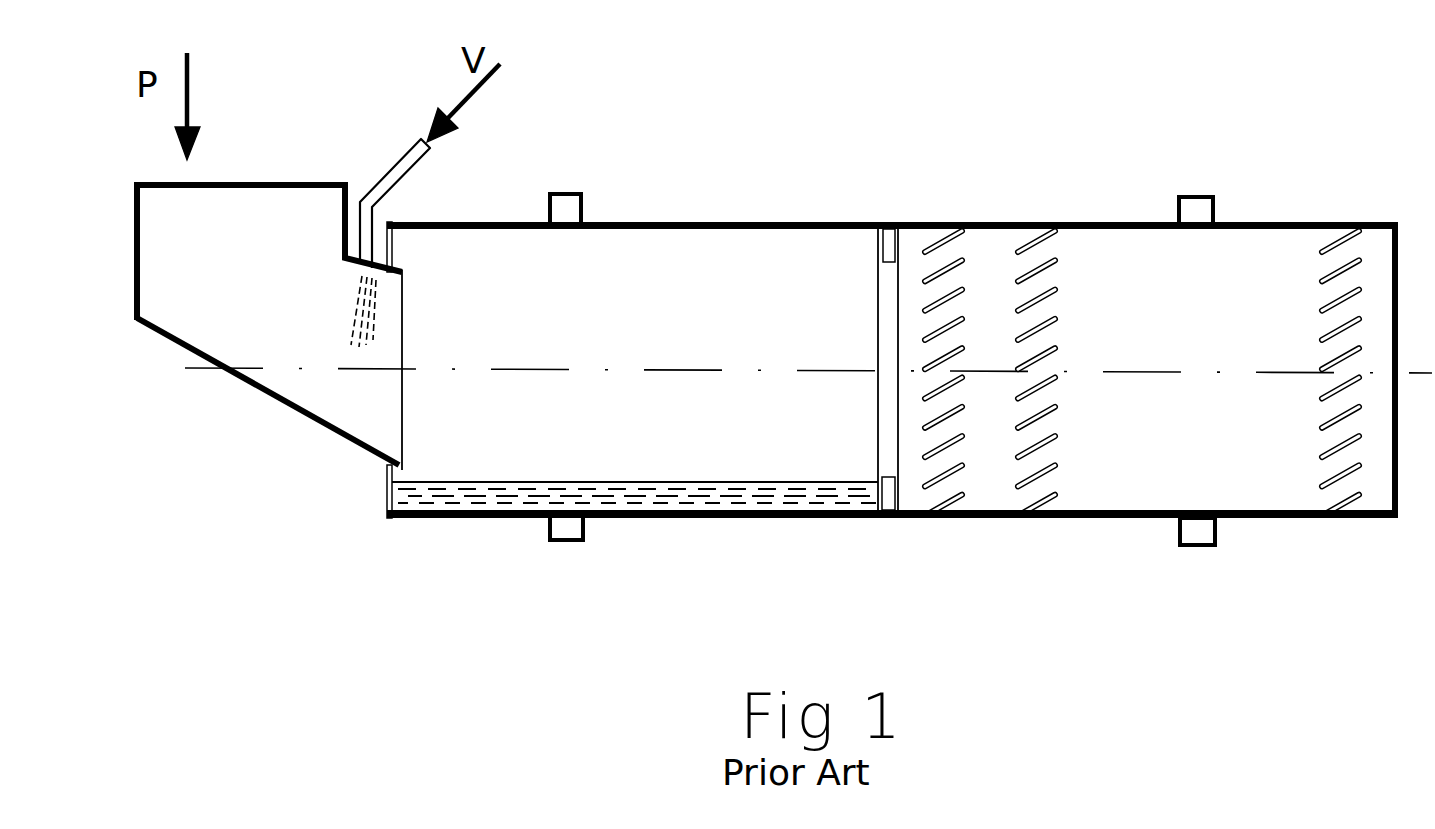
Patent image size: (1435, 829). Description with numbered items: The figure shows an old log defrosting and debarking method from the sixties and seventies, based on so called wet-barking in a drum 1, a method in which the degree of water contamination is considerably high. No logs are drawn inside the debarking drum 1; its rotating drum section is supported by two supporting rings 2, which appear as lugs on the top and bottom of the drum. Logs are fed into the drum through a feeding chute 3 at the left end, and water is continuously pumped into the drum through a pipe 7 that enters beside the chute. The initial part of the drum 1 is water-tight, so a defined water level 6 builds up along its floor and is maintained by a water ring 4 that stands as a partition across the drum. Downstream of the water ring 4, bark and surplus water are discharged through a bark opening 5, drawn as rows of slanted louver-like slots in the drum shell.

The drum 1 is at (737, 222).
The supporting rings 2 is at (574, 216).
The feeding chute 3 is at (263, 198).
The water ring 4 is at (895, 243).
The bark opening 5 is at (945, 493).
The water level 6 is at (698, 482).
The pipe 7 is at (412, 168).